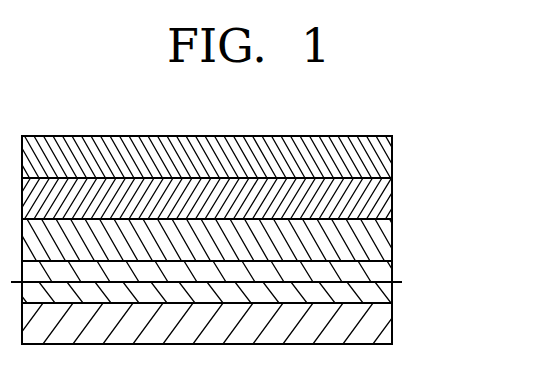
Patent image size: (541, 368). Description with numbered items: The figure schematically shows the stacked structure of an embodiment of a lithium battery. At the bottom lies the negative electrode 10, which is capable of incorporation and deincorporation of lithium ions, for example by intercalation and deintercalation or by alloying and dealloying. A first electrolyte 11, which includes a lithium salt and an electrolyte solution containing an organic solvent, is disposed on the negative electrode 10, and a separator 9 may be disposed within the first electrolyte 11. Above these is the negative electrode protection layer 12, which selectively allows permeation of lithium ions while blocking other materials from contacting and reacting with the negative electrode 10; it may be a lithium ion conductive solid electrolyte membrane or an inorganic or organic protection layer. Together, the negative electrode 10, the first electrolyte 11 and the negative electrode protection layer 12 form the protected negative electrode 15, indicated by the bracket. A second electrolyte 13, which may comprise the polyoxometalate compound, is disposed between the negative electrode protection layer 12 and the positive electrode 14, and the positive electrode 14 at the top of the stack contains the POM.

The positive electrode 14 is at (382, 160).
The second electrolyte 13 is at (383, 202).
The negative electrode protection layer 12 is at (382, 242).
The separator 9 is at (400, 280).
The first electrolyte 11 is at (392, 293).
The negative electrode 10 is at (240, 323).
The protected negative electrode 15 is at (257, 281).